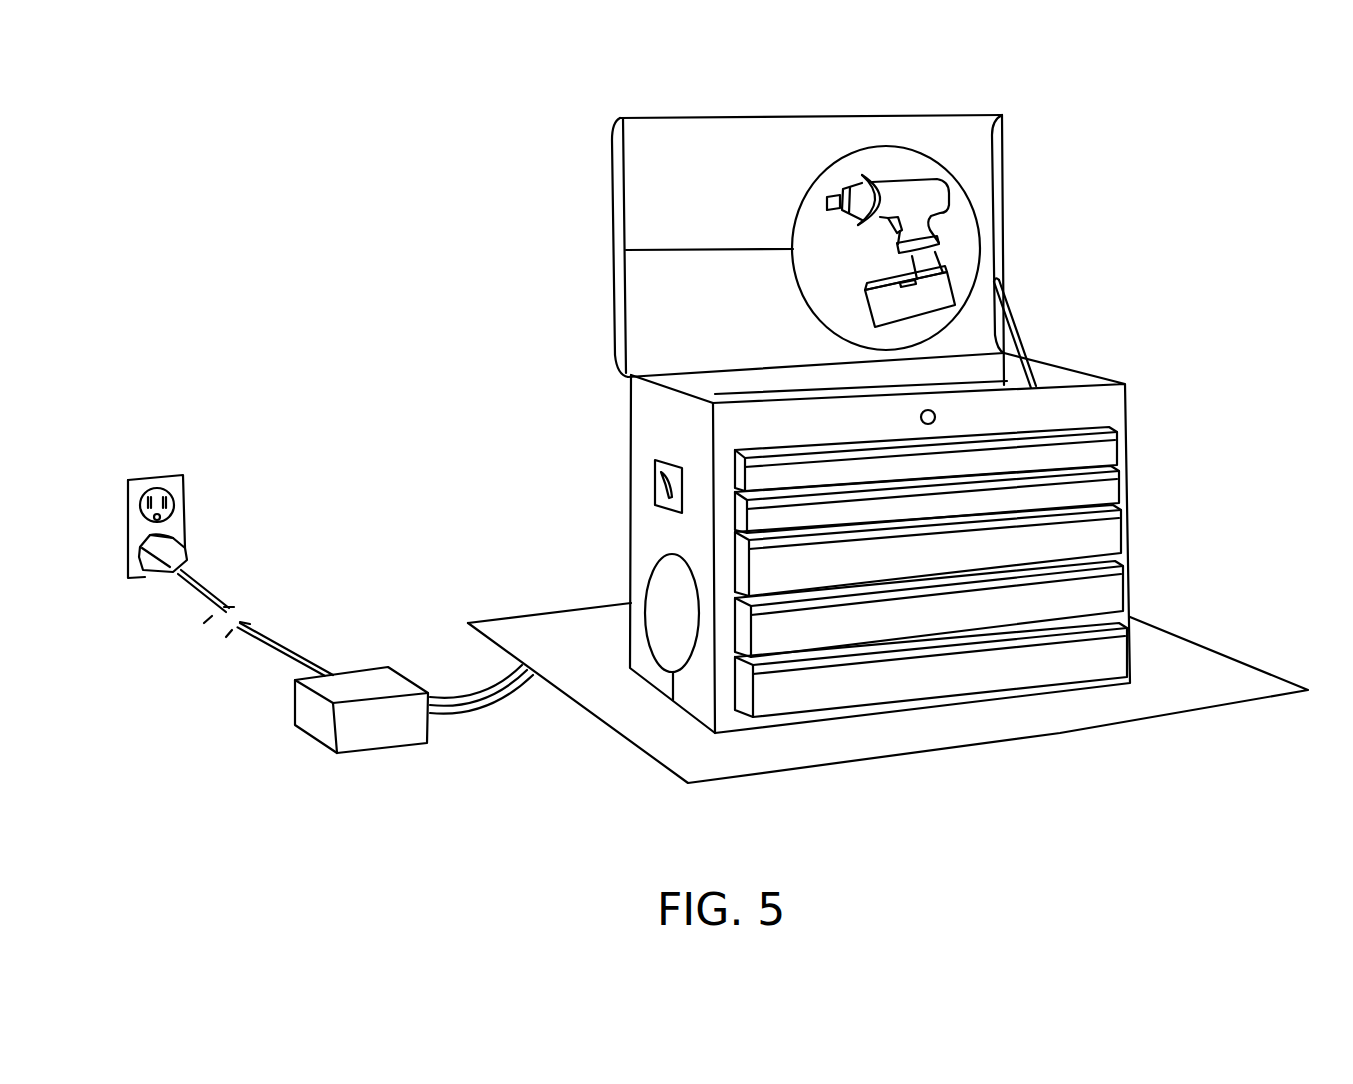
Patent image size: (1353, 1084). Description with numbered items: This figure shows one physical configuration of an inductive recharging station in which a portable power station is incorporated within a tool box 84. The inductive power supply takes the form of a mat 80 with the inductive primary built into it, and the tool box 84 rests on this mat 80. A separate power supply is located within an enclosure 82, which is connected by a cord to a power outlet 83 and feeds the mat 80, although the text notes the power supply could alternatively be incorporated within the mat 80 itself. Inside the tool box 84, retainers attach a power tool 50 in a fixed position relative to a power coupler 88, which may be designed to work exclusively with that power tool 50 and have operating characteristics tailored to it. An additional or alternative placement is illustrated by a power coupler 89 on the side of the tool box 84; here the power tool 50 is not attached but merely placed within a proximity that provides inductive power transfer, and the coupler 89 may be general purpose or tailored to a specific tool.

The power tool 50 is at (928, 178).
The mat 80 is at (1028, 740).
The enclosure 82 is at (383, 750).
The power outlet 83 is at (128, 510).
The tool box 84 is at (1128, 411).
The power coupler 88 is at (792, 231).
The power coupler 89 is at (641, 575).